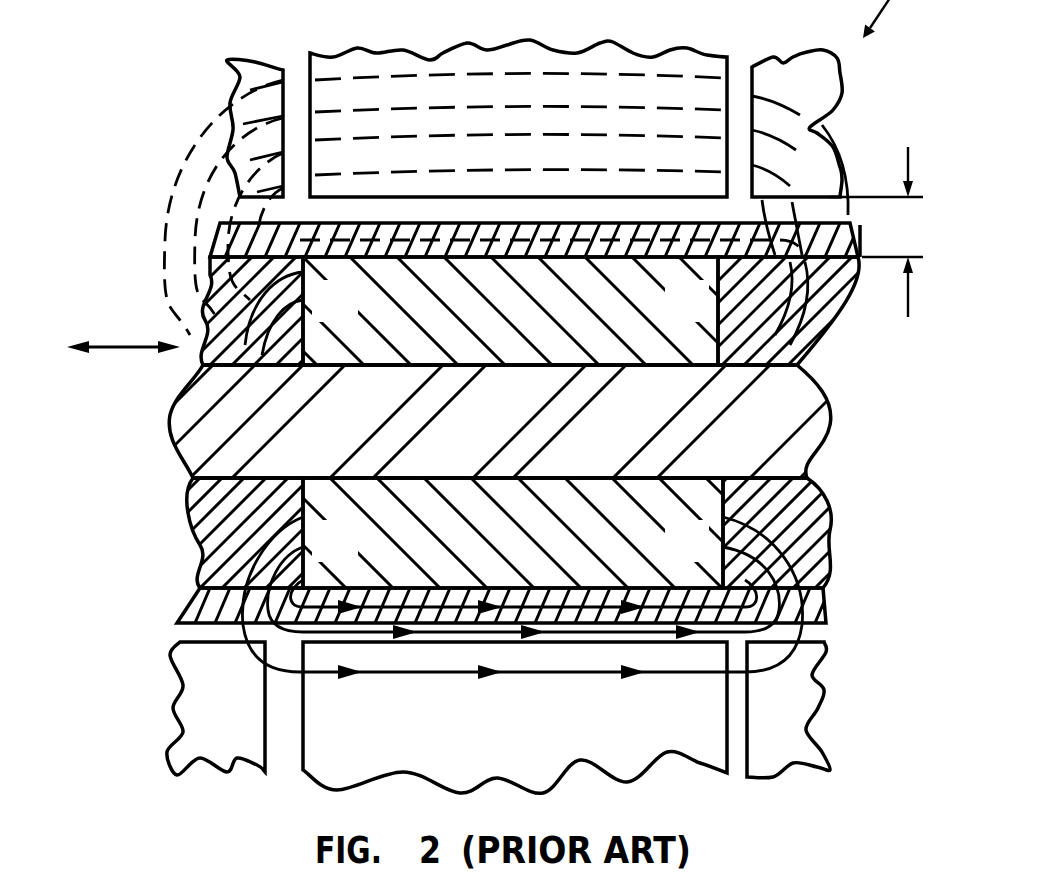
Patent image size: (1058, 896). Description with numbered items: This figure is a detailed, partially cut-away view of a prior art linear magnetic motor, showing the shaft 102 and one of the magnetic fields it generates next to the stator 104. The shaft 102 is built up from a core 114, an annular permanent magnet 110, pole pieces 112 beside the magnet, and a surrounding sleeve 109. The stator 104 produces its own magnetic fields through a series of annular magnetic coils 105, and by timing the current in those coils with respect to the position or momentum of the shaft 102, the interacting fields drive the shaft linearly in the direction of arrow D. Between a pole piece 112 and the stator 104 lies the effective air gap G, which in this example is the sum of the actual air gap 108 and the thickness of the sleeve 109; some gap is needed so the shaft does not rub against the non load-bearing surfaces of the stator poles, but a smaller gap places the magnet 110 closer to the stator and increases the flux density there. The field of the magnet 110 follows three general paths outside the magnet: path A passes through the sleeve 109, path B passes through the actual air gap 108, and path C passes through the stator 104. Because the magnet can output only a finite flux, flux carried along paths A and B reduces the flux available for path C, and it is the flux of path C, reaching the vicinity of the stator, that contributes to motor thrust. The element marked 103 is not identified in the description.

The shaft 102 is at (854, 424).
The gap between pole and layer 103 is at (860, 206).
The stator 104 is at (867, 118).
The annular magnetic coils 105 is at (712, 53).
The actual air gap 108 is at (160, 633).
The sleeve 109 is at (220, 230).
The permanent magnet 110 is at (313, 366).
The pole pieces 112 is at (193, 312).
The core 114 is at (770, 412).
The path A is at (462, 627).
The path B is at (590, 650).
The path C is at (680, 677).
The arrow D is at (123, 359).
The effective air gap G is at (906, 232).